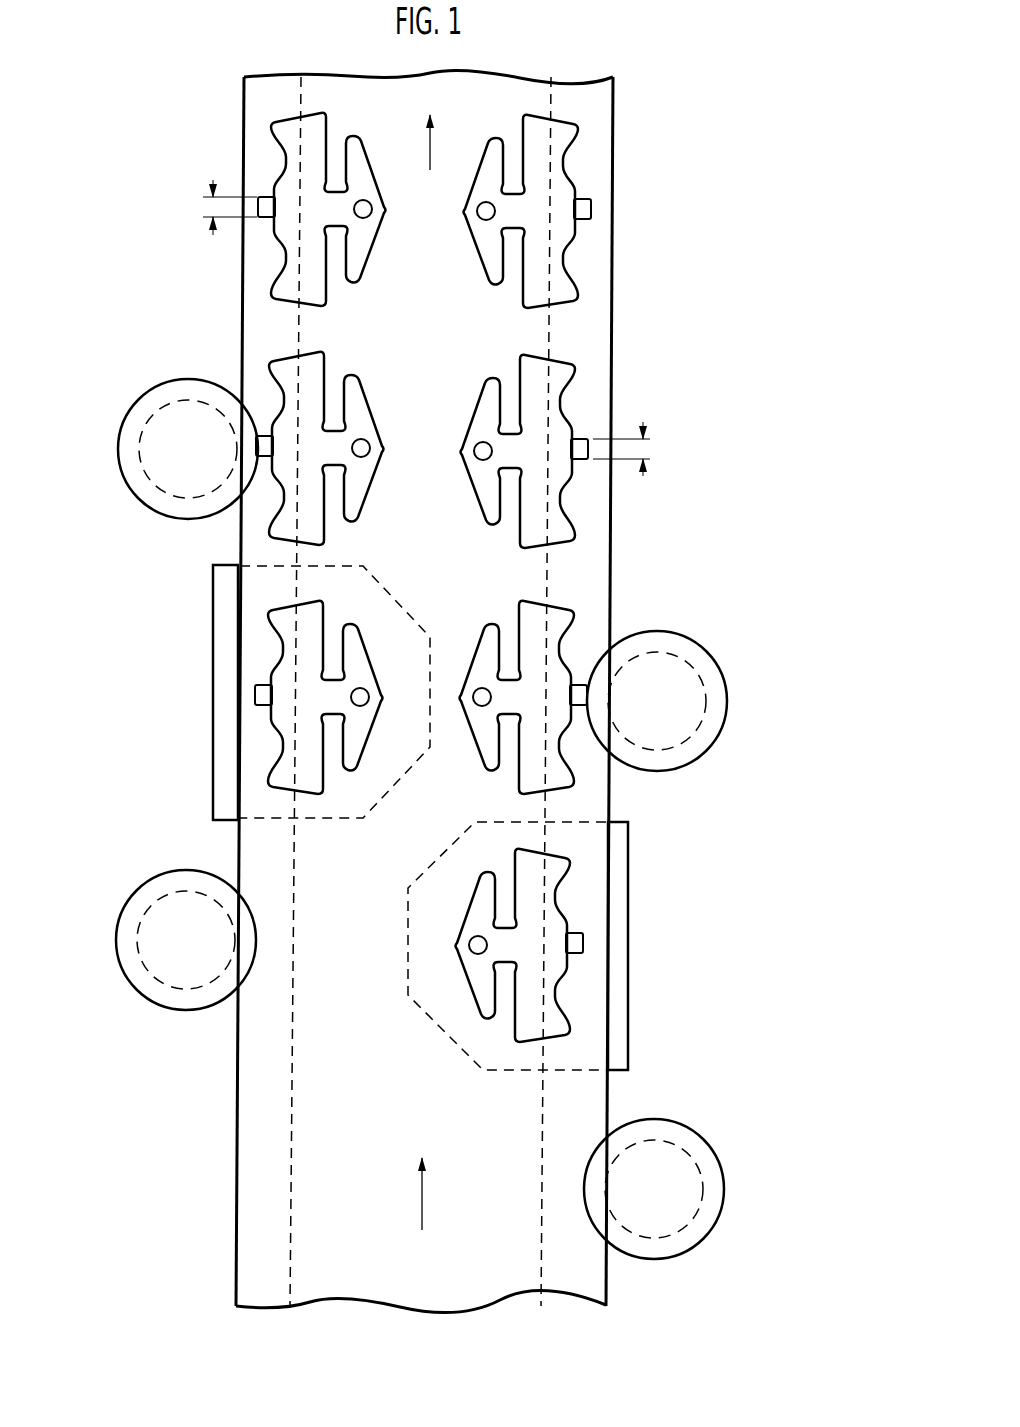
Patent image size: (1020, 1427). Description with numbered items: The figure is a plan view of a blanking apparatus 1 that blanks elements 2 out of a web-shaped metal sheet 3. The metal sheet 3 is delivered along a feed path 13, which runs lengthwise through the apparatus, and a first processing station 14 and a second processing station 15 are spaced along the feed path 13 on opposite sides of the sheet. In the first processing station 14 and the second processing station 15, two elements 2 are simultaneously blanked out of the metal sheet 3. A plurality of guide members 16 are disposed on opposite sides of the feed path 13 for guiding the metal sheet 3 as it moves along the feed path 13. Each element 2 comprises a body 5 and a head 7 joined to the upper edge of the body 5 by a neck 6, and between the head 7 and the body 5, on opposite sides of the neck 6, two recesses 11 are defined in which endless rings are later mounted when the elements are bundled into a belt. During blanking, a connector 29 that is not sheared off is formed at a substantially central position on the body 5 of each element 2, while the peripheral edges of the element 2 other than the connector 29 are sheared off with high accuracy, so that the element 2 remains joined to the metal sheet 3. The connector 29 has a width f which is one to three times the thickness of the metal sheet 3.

The blanking apparatus 1 is at (432, 683).
The element 2 is at (358, 229).
The web-shaped metal sheet 3 is at (441, 691).
The body 5 is at (285, 705).
The neck 6 is at (325, 697).
The head 7 is at (355, 722).
The recess 11 is at (330, 667).
The feed path 13 is at (653, 487).
The first processing station 14 is at (640, 863).
The second processing station 15 is at (212, 607).
The guide member 16 is at (157, 458).
The connector 29 is at (262, 196).